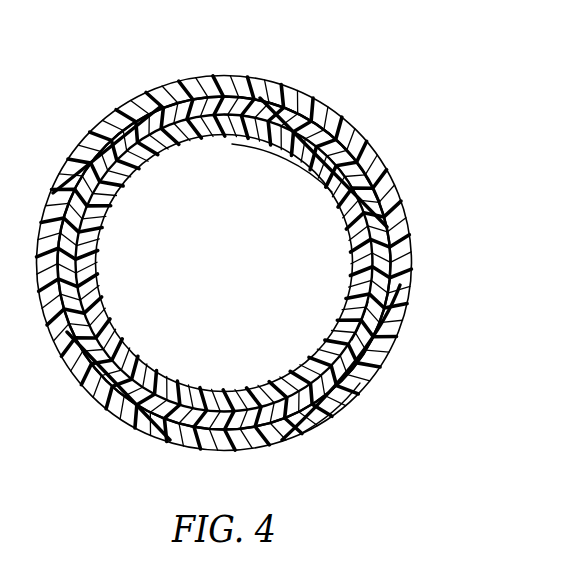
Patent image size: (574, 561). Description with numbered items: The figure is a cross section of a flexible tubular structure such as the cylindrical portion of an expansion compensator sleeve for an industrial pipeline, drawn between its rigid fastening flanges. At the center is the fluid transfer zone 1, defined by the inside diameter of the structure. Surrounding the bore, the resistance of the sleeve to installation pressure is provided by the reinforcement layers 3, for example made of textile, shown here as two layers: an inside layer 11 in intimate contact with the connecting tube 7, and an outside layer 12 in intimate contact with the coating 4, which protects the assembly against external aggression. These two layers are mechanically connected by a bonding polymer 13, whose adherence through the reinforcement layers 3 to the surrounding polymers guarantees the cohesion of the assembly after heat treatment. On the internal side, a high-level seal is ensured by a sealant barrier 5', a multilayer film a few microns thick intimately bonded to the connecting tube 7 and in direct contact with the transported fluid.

The fluid transfer zone 1 is at (170, 353).
The reinforcement layer 3 is at (437, 127).
The coating 4 is at (250, 86).
The sealant barrier 5' is at (391, 333).
The connecting tube 7 is at (355, 288).
The inside layer 11 is at (348, 178).
The outside layer 12 is at (340, 157).
The bonding polymer 13 is at (310, 407).